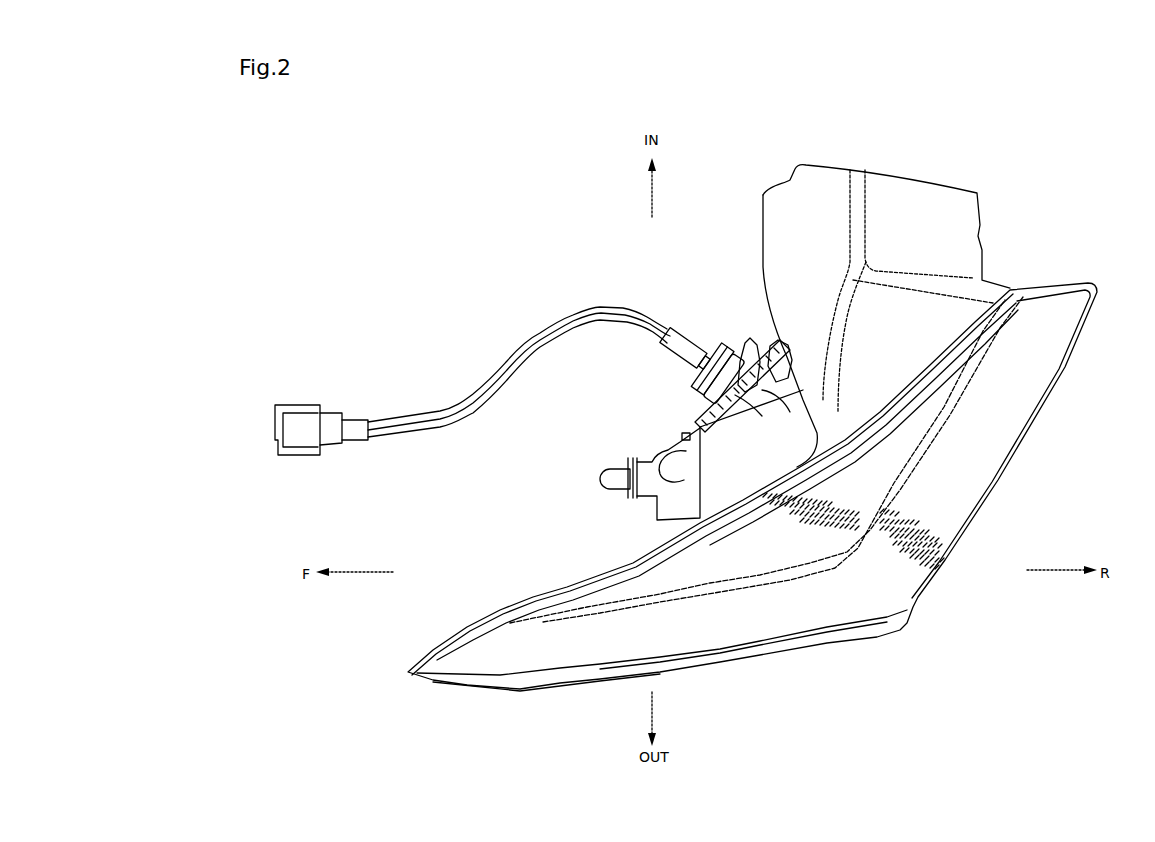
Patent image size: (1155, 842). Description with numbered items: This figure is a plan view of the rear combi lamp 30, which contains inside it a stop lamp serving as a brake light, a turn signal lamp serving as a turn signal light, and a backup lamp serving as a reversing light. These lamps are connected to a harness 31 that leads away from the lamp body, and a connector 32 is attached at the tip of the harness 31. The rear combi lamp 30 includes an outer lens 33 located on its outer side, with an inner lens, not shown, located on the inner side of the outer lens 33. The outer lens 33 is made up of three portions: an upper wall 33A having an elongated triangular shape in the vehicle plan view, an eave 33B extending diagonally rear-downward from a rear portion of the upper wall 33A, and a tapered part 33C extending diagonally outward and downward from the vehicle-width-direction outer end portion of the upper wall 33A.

The rear combi lamp 30 is at (1045, 420).
The harness 31 is at (477, 391).
The connector 32 is at (293, 400).
The outer lens 33 is at (1068, 368).
The upper wall 33A is at (903, 430).
The eave 33B is at (990, 457).
The tapered part 33C is at (753, 627).